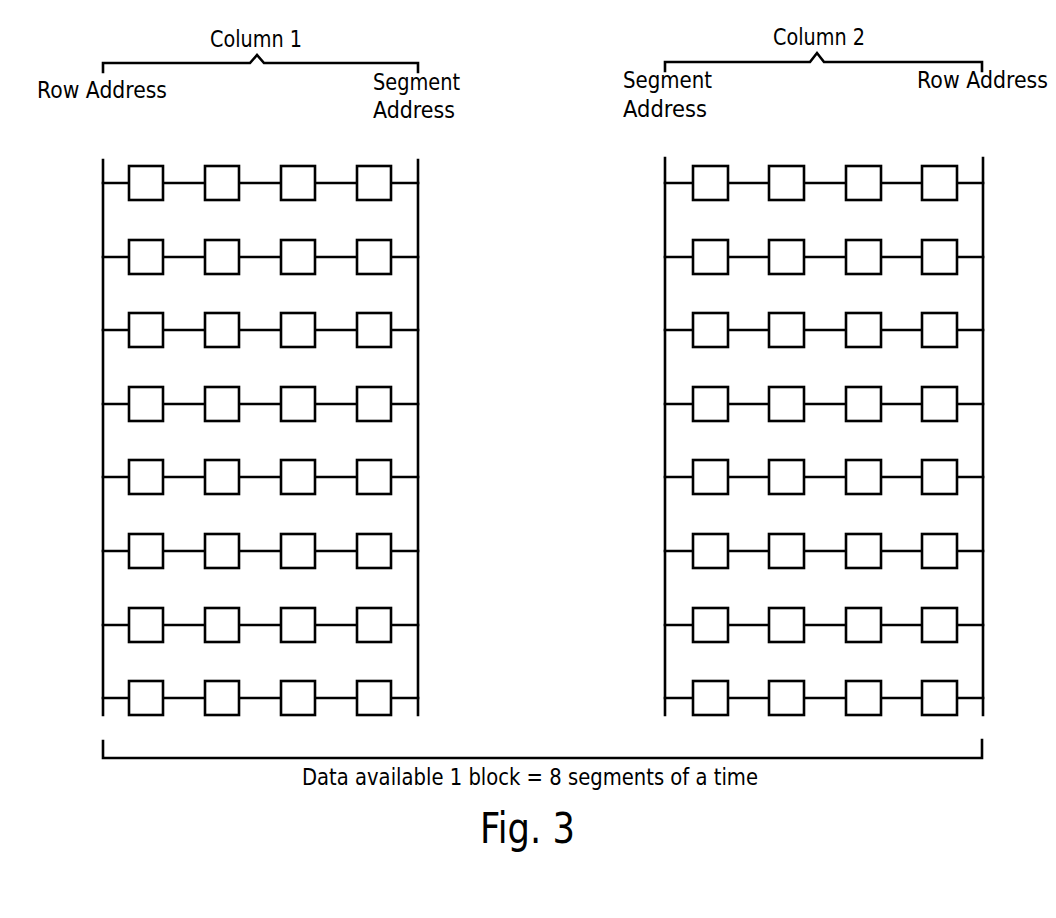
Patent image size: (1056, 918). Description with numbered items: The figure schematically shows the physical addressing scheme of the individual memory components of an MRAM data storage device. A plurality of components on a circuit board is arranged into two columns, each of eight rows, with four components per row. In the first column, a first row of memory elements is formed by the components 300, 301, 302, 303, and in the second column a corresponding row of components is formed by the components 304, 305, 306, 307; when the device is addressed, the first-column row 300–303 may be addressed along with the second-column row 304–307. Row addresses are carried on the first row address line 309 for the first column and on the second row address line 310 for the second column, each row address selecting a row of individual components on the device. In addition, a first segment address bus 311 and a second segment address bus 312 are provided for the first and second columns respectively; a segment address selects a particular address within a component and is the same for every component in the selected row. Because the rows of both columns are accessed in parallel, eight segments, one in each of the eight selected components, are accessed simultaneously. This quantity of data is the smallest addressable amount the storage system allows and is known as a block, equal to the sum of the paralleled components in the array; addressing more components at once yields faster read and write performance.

The memory component 300 is at (148, 166).
The memory component 301 is at (224, 166).
The memory component 302 is at (298, 166).
The memory component 303 is at (373, 166).
The memory component 304 is at (710, 166).
The memory component 305 is at (789, 166).
The memory component 306 is at (861, 166).
The memory component 307 is at (936, 166).
The first row address line 309 is at (102, 222).
The second row address line 310 is at (983, 222).
The first segment address bus 311 is at (418, 290).
The second segment address bus 312 is at (665, 213).